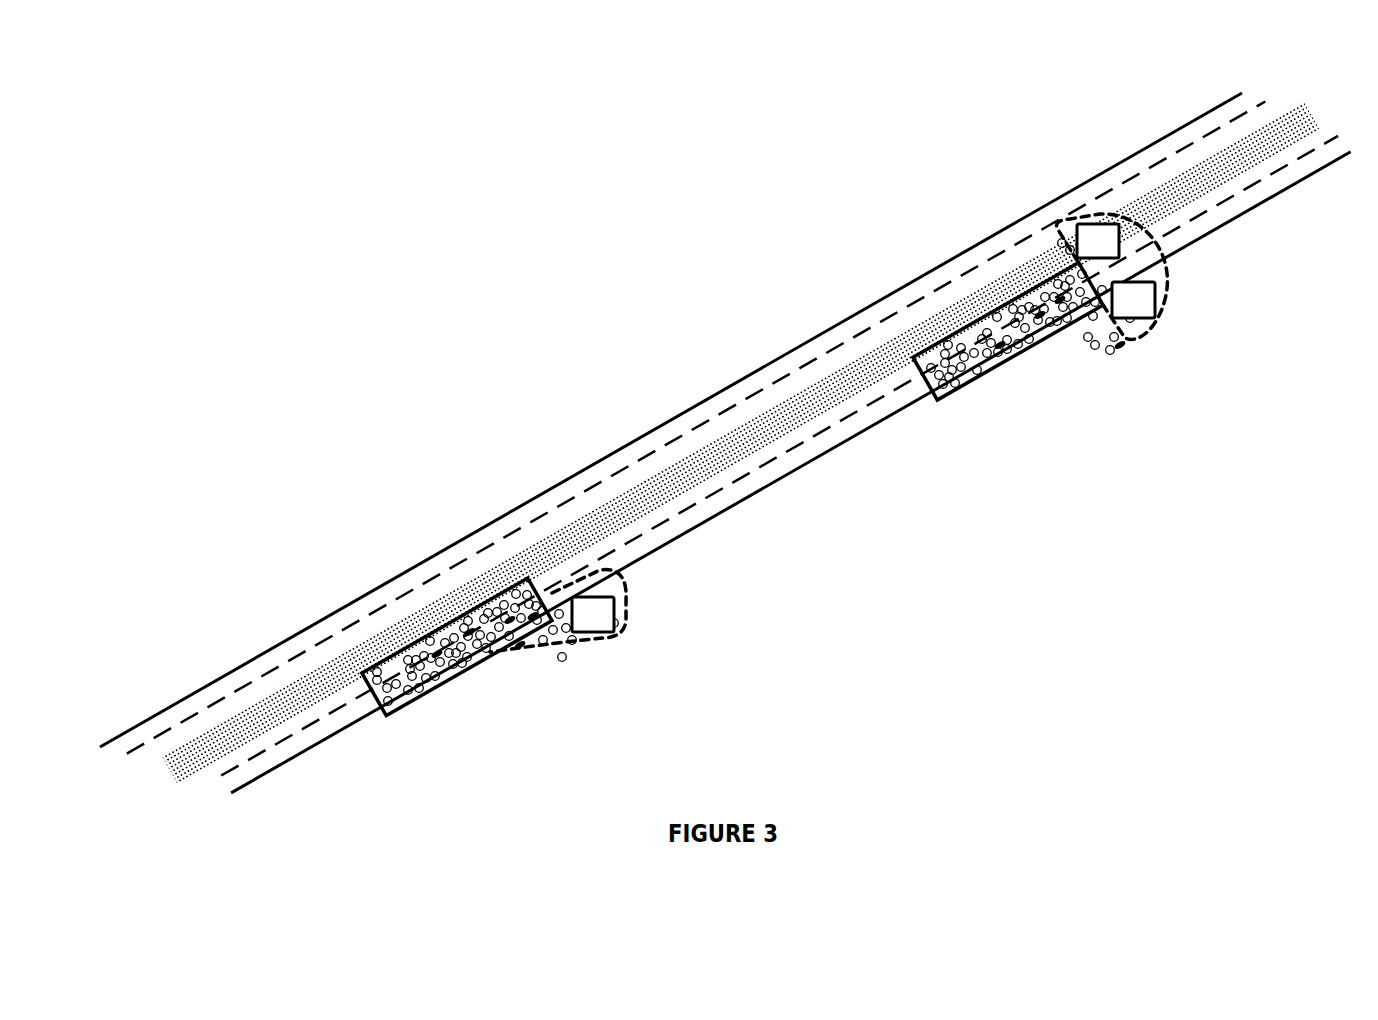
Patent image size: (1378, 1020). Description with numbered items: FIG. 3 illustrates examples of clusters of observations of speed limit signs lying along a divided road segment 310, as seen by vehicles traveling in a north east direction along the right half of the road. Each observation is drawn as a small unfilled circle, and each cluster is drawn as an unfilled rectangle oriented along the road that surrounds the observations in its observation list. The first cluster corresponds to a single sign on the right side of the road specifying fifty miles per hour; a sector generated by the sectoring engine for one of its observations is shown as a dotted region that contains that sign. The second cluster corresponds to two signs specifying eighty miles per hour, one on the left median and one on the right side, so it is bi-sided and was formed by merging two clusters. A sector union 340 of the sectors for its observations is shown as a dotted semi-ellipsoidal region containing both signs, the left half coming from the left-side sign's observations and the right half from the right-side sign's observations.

The road segment 310 is at (810, 462).
The sector union 340 is at (1148, 328).